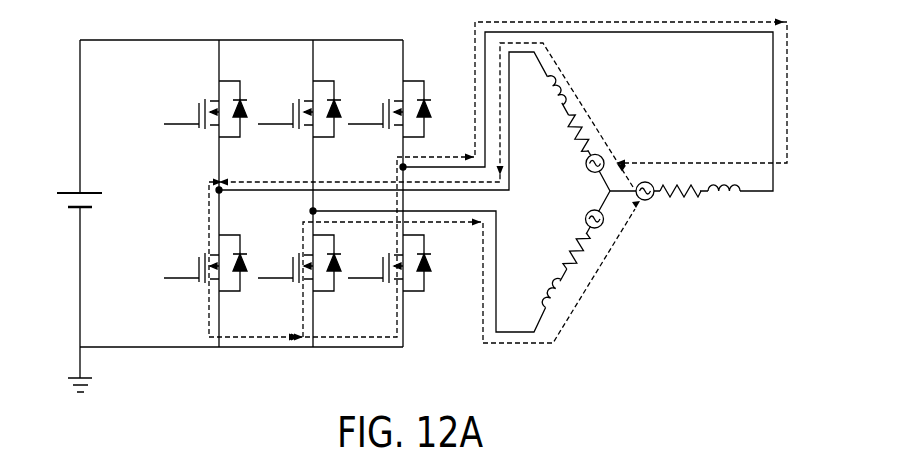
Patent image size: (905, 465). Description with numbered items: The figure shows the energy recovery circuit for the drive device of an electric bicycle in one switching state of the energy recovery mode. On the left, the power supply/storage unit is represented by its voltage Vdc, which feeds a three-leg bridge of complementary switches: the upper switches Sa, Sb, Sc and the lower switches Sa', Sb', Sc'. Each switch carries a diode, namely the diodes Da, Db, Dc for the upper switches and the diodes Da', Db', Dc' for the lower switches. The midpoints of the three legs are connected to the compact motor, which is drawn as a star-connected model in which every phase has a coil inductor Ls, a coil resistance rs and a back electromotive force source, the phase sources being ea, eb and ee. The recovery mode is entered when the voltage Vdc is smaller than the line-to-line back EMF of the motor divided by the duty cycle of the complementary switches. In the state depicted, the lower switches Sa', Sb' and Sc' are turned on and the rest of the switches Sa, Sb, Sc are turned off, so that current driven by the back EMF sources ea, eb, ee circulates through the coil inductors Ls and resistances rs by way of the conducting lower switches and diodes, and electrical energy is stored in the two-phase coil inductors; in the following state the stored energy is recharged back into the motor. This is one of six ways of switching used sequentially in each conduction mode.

The voltage of the power supply/storage unit Vdc is at (65, 197).
The switch Sa is at (202, 109).
The switch Sb is at (296, 109).
The switch Sc is at (386, 109).
The switch S'a Sa' is at (202, 263).
The switch S'b Sb' is at (296, 263).
The switch S'c Sc' is at (386, 263).
The diode Da is at (248, 138).
The diode Db is at (342, 138).
The diode Dc is at (435, 129).
The diode D'a Da' is at (252, 292).
The diode D'b Db' is at (345, 292).
The diode D'c Dc' is at (436, 290).
The coil inductor Ls is at (637, 191).
The coil resistance rs is at (624, 192).
The back EMF of phase a ea is at (584, 169).
The back EMF of phase b eb is at (588, 227).
The back EMF of third phase ee is at (648, 201).